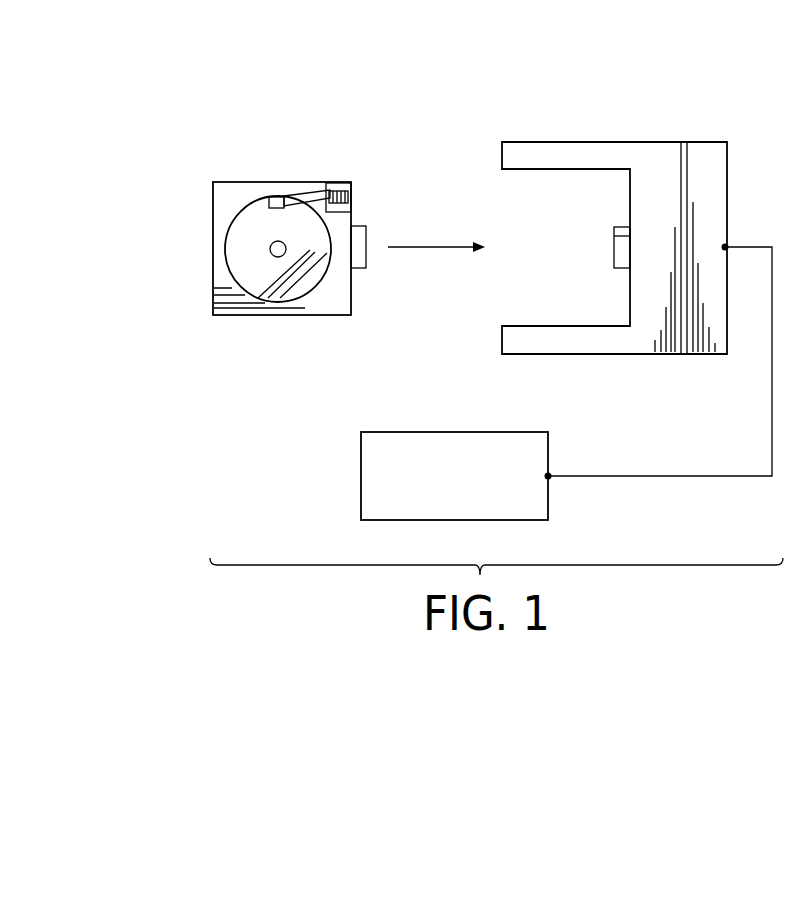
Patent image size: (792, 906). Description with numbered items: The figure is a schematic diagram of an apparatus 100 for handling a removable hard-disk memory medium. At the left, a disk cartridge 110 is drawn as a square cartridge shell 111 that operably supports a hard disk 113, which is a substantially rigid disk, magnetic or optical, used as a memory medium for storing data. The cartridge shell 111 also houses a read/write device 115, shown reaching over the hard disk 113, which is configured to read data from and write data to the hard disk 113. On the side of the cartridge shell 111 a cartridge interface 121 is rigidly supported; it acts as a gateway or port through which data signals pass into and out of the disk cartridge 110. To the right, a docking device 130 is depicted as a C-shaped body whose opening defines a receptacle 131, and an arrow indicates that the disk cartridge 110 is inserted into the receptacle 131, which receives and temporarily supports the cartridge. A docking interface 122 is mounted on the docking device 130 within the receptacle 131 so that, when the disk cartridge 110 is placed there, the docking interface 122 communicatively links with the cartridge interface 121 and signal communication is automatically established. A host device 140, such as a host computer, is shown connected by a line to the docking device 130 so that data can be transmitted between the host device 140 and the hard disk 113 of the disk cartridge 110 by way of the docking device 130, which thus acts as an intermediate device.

The apparatus 100 is at (333, 52).
The disk cartridge 110 is at (235, 172).
The cartridge shell 111 is at (213, 260).
The hard disk 113 is at (313, 293).
The read/write device 115 is at (310, 196).
The cartridge interface 121 is at (367, 235).
The docking interface 122 is at (613, 248).
The docking device 130 is at (668, 134).
The receptacle 131 is at (526, 281).
The host device 140 is at (473, 491).